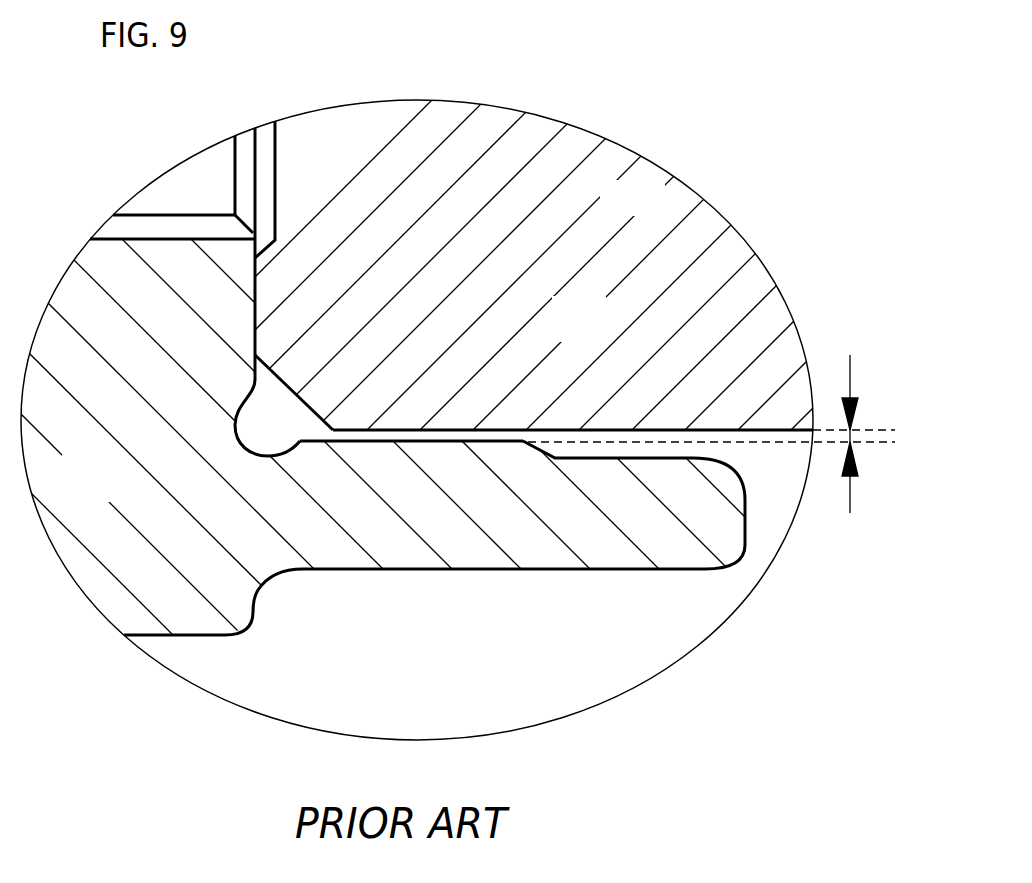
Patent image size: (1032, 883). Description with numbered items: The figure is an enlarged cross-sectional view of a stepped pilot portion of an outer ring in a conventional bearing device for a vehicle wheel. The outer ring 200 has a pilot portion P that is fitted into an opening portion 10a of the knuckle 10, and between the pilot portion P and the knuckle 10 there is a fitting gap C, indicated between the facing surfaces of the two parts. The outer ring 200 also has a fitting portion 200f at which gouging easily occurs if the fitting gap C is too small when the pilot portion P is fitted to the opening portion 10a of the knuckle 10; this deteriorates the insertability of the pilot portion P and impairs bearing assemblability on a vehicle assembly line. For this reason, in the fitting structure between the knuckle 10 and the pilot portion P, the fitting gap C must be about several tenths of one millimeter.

The knuckle 10 is at (598, 334).
The opening portion 10a is at (637, 432).
The outer ring 200 is at (111, 496).
The fitting portion 200f is at (362, 432).
The pilot portion P is at (605, 547).
The fitting gap C is at (726, 434).